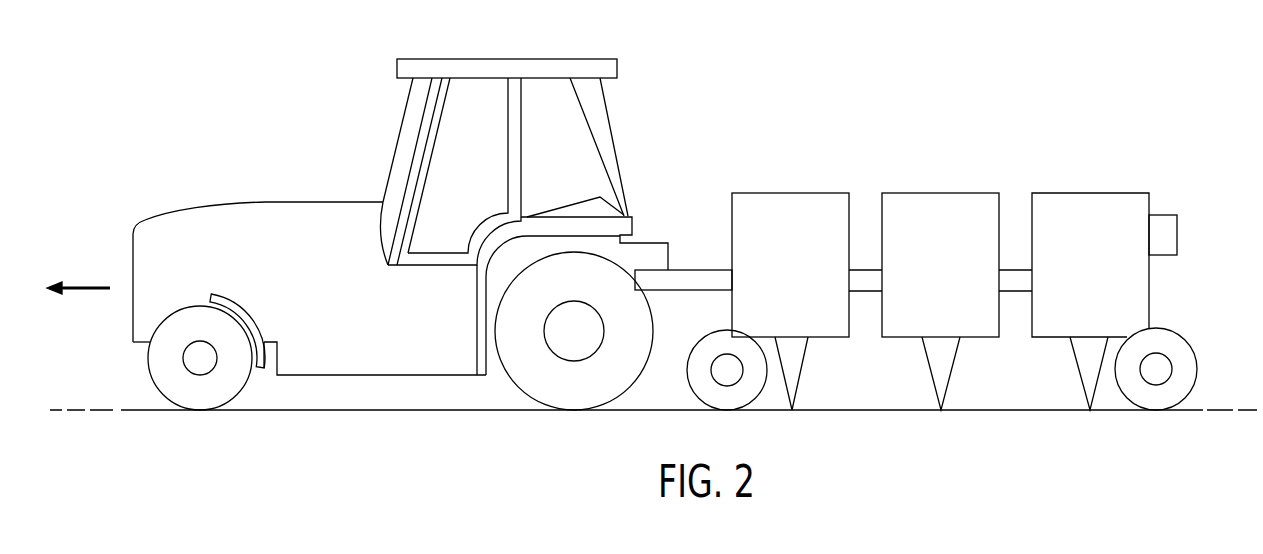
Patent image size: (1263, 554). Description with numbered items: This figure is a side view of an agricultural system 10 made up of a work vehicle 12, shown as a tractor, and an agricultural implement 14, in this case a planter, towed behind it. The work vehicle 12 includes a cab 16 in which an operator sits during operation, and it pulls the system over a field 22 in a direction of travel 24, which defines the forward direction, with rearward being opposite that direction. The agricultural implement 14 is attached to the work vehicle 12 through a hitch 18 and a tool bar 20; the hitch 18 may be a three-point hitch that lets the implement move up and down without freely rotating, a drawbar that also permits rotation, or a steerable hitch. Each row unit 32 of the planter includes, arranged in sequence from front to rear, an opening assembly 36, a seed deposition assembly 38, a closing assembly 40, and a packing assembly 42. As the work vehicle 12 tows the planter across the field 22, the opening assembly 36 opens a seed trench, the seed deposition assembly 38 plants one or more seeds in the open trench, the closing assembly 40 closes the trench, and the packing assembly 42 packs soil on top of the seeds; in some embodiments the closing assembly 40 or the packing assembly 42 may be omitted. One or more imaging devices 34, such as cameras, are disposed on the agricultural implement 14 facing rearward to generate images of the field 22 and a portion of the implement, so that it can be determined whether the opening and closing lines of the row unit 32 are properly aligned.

The agricultural system 10 is at (757, 76).
The work vehicle 12 is at (293, 126).
The agricultural implement 14 is at (937, 132).
The cab 16 is at (478, 171).
The hitch 18 is at (669, 255).
The tool bar 20 is at (705, 270).
The field 22 is at (871, 411).
The direction of travel 24 is at (85, 283).
The row unit 32 is at (1018, 164).
The imaging device 34 is at (1162, 215).
The opening assembly 36 is at (792, 193).
The seed deposition assembly 38 is at (940, 193).
The closing assembly 40 is at (1091, 193).
The packing assembly 42 is at (1199, 348).